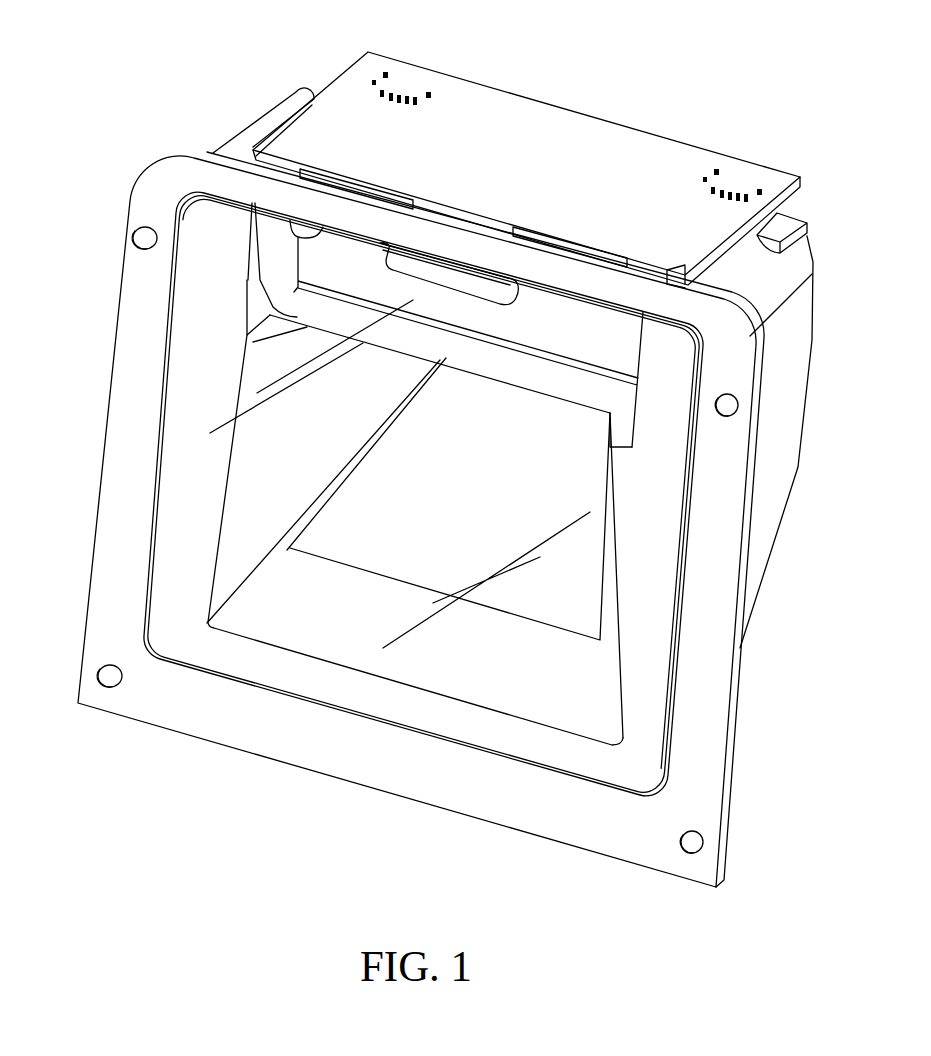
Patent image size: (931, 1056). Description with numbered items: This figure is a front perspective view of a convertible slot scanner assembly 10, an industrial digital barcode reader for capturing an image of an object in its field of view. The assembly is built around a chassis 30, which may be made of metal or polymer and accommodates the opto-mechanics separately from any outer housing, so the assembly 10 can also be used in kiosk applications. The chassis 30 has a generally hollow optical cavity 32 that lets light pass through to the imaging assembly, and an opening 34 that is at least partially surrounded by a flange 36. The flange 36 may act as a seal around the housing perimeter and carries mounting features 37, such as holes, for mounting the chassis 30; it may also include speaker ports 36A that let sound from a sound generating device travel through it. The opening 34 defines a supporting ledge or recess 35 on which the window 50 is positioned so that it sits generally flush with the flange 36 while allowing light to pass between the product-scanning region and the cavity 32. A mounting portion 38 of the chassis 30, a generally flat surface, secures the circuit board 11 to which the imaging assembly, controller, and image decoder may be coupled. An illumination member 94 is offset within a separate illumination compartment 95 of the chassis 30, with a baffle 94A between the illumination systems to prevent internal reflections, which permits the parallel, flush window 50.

The convertible slot scanner assembly 10 is at (792, 52).
The circuit board 11 is at (683, 143).
The chassis 30 is at (812, 246).
The optical cavity 32 is at (336, 615).
The opening 34 is at (501, 759).
The supporting ledge or recess 35 is at (137, 633).
The flange 36 is at (707, 745).
The speaker ports 36A is at (107, 447).
The mounting features 37 is at (738, 408).
The mounting portion 38 is at (294, 93).
The window 50 is at (180, 407).
The illumination member 94 is at (427, 268).
The baffle 94A is at (537, 393).
The illumination compartment 95 is at (290, 221).